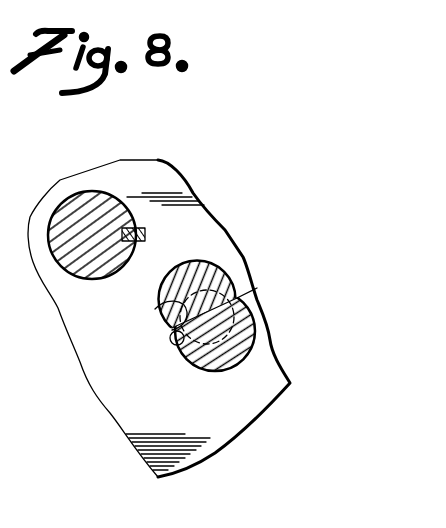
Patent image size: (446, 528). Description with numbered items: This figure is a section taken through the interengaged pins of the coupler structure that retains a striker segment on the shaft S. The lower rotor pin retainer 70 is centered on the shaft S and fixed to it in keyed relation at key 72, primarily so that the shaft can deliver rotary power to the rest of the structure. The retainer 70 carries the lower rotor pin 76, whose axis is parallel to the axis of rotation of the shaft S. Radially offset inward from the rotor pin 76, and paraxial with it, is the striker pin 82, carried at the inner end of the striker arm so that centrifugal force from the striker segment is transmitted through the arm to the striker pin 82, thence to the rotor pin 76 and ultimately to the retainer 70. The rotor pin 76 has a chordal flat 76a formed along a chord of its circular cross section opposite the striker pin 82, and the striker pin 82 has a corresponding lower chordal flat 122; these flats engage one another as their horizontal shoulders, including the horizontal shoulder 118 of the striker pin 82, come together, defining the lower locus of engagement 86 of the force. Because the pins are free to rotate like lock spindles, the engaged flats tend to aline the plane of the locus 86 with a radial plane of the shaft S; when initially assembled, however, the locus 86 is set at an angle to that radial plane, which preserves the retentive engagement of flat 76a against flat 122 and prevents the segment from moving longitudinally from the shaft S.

The shaft S is at (85, 208).
The lower rotor pin retainer 70 is at (132, 402).
The key 72 is at (138, 228).
The lower rotor pin 76 is at (253, 357).
The chordal flat 76a is at (162, 307).
The striker pin 82 is at (198, 268).
The lower locus of engagement 86 is at (237, 298).
The horizontal shoulder 118 is at (213, 363).
The lower chordal flat 122 is at (178, 342).